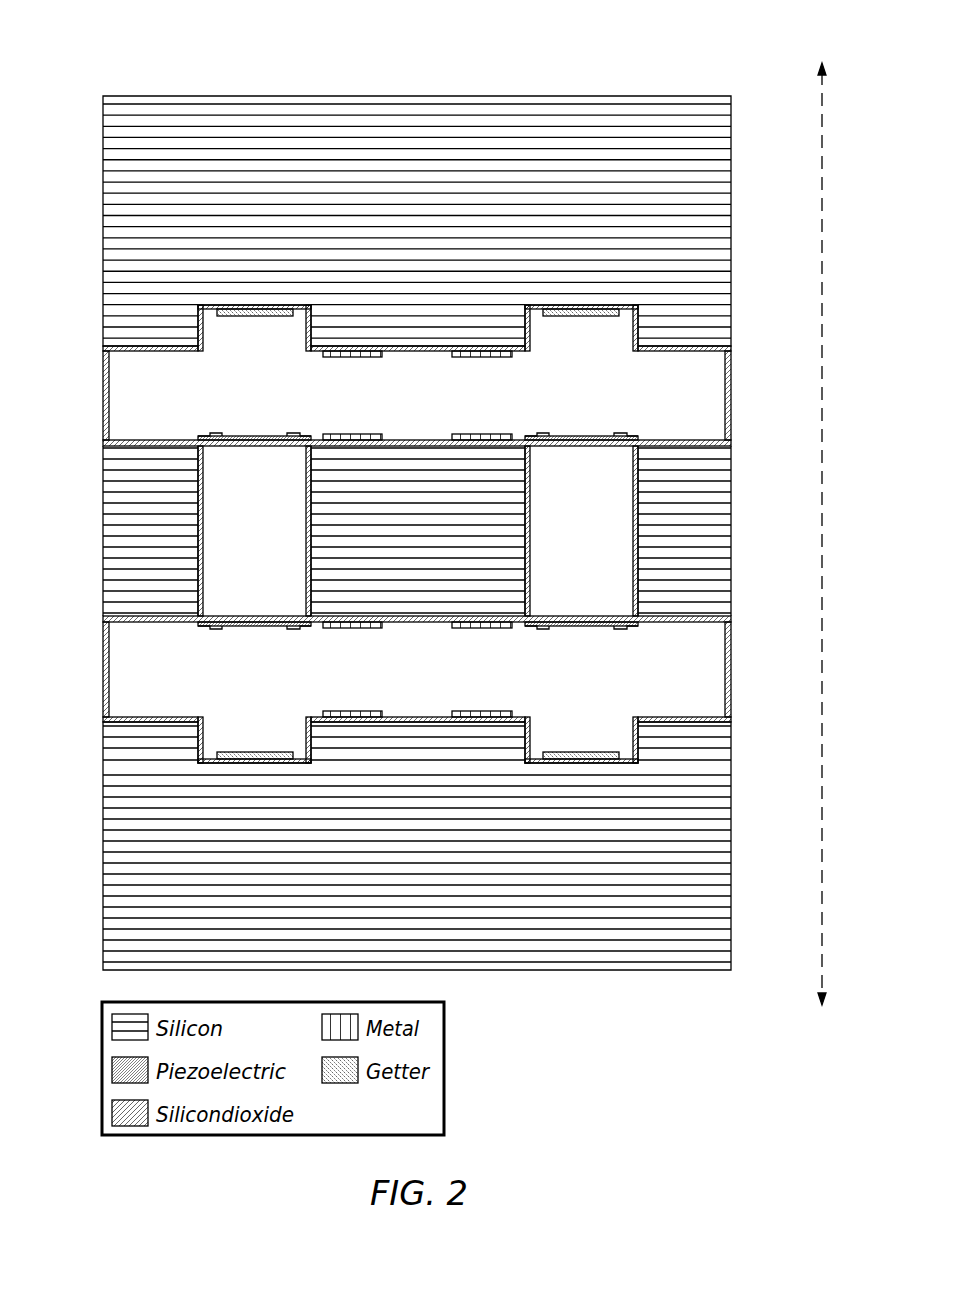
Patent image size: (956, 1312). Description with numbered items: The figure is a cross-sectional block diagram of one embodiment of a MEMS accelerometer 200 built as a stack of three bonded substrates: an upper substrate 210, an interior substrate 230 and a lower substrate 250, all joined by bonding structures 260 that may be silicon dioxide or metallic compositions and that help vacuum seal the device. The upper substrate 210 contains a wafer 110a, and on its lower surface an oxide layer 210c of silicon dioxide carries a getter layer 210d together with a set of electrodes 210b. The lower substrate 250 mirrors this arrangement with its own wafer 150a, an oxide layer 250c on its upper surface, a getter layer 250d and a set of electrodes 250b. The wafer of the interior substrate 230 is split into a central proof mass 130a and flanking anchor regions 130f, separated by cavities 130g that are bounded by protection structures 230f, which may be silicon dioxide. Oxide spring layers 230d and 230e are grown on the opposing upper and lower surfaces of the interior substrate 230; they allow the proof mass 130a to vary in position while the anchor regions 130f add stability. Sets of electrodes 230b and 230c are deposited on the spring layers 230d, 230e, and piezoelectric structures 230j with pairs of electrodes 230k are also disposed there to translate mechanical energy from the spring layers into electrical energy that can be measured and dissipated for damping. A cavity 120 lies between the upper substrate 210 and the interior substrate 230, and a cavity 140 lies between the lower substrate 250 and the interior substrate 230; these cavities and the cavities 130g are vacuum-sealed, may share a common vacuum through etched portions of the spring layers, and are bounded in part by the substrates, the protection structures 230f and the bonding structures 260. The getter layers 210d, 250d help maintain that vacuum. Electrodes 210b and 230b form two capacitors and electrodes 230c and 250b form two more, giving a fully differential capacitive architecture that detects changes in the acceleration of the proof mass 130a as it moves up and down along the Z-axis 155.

The MEMS accelerometer 200 is at (667, 55).
The Z-axis 155 is at (823, 531).
The upper substrate 210 is at (98, 96).
The wafer 110a is at (440, 207).
The set of electrodes 210b is at (329, 358).
The oxide layer 210c is at (418, 352).
The getter layer 210d is at (259, 317).
The cavity 120 is at (433, 423).
The bonding structures 260 is at (103, 392).
The interior substrate 230 is at (98, 440).
The anchor regions 130f is at (175, 539).
The proof mass 130a is at (440, 539).
The cavities 130g is at (276, 604).
The protection structures 230f is at (305, 535).
The spring layer 230d is at (151, 438).
The spring layer 230e is at (151, 626).
The piezoelectric structures 230j is at (257, 436).
The pairs of electrodes 230k is at (203, 436).
The set of electrodes 230b is at (359, 434).
The set of electrodes 230c is at (359, 630).
The cavity 140 is at (433, 662).
The lower substrate 250 is at (98, 717).
The wafer 150a is at (440, 862).
The set of electrodes 250b is at (331, 711).
The oxide layer 250c is at (418, 716).
The getter layer 250d is at (255, 752).